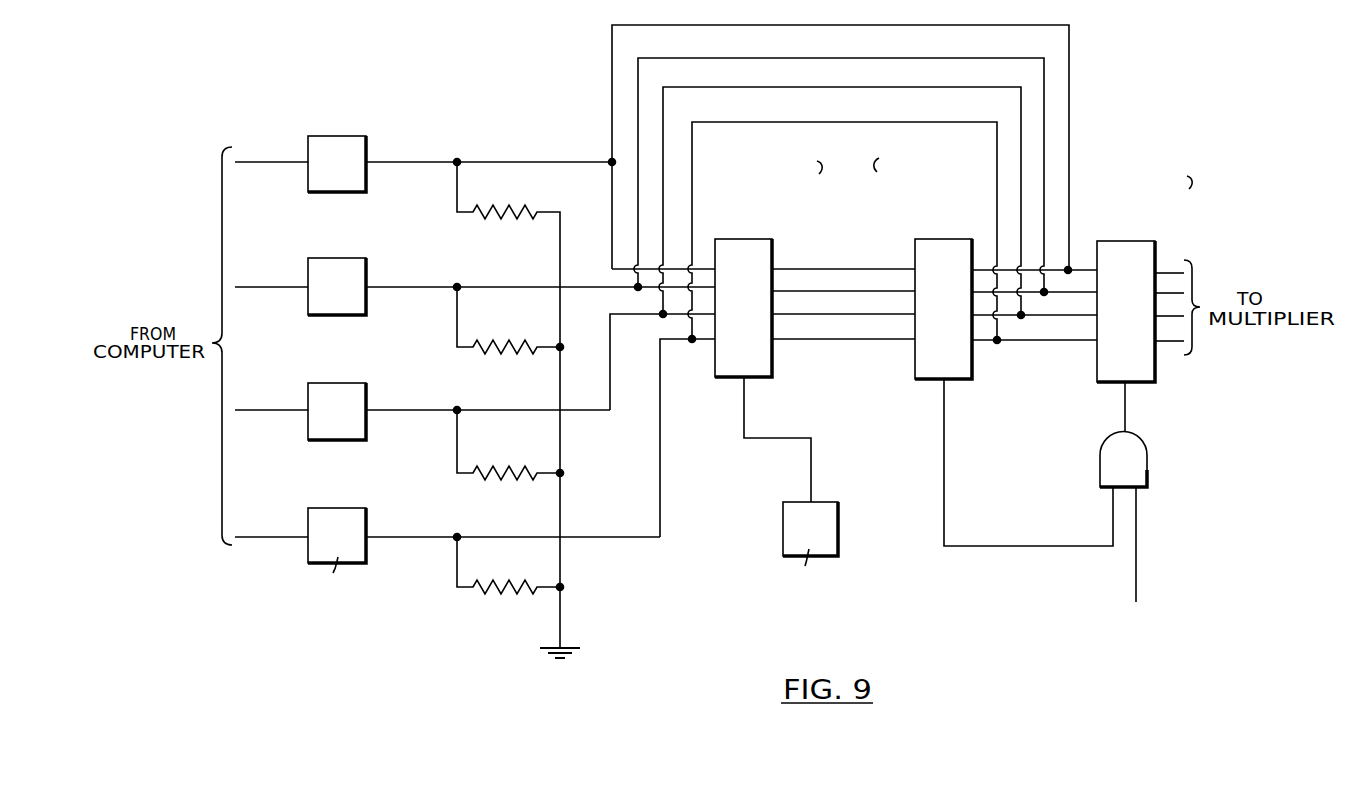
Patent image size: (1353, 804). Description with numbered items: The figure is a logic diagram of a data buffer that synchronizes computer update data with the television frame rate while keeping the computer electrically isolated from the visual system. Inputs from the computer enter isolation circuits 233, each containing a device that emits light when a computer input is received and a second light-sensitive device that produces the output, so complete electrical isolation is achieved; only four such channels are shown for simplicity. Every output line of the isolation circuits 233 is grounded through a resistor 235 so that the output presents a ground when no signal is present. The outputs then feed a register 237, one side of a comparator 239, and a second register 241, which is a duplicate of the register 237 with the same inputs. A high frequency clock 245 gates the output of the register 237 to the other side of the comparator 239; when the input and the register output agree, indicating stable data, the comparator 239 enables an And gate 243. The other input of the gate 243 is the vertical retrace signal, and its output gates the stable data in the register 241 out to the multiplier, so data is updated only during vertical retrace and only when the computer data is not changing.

The isolation circuits 233 is at (348, 138).
The resistor 235 is at (515, 212).
The register 237 is at (752, 239).
The comparator 239 is at (936, 239).
The second register 241 is at (1140, 243).
The And gate 243 is at (1137, 465).
The high frequency clock 245 is at (823, 503).